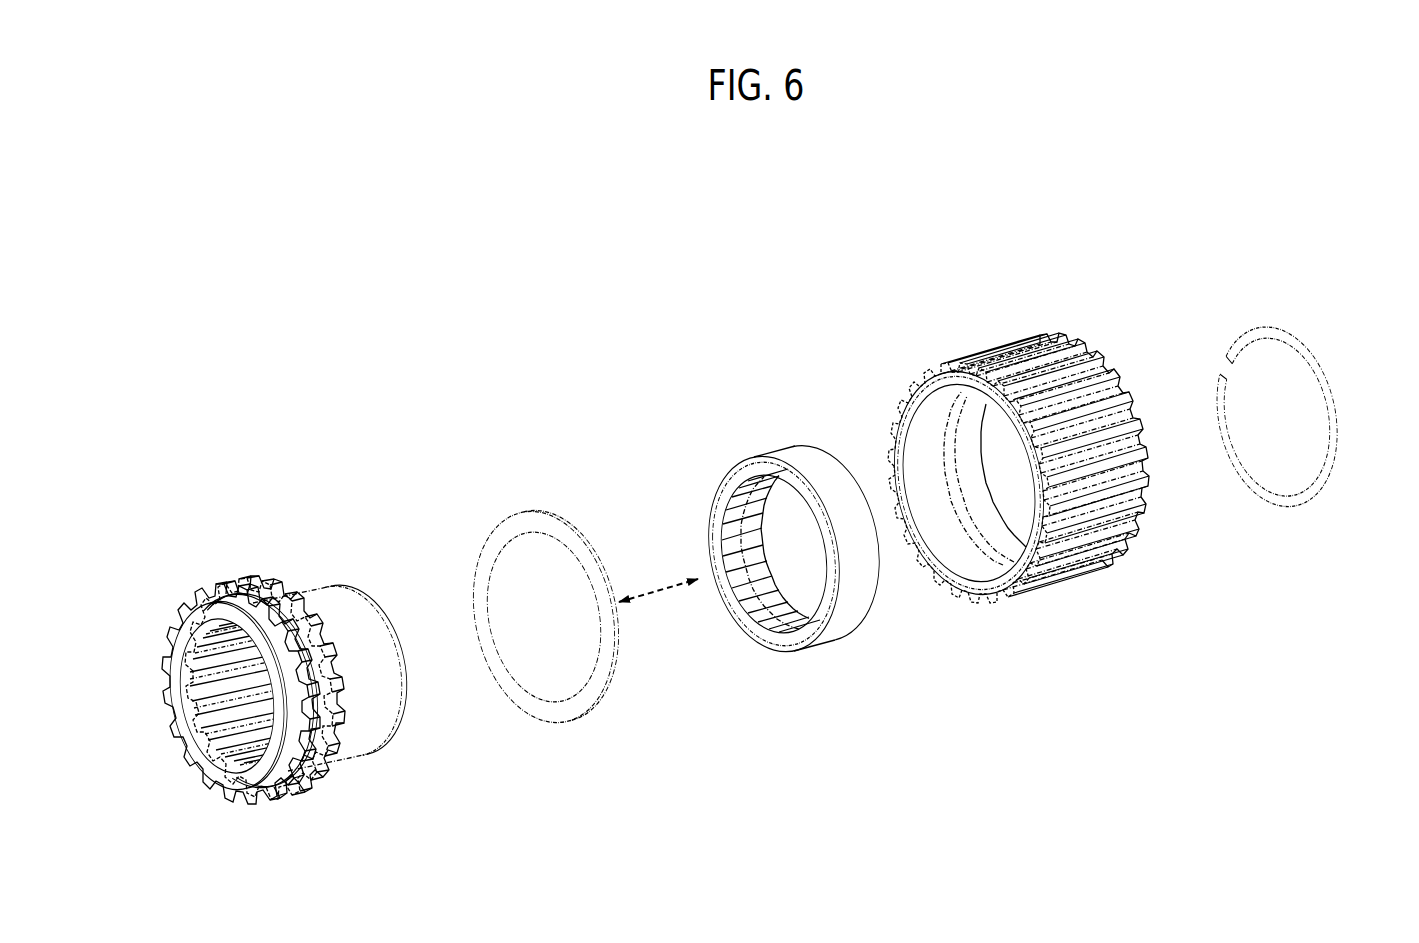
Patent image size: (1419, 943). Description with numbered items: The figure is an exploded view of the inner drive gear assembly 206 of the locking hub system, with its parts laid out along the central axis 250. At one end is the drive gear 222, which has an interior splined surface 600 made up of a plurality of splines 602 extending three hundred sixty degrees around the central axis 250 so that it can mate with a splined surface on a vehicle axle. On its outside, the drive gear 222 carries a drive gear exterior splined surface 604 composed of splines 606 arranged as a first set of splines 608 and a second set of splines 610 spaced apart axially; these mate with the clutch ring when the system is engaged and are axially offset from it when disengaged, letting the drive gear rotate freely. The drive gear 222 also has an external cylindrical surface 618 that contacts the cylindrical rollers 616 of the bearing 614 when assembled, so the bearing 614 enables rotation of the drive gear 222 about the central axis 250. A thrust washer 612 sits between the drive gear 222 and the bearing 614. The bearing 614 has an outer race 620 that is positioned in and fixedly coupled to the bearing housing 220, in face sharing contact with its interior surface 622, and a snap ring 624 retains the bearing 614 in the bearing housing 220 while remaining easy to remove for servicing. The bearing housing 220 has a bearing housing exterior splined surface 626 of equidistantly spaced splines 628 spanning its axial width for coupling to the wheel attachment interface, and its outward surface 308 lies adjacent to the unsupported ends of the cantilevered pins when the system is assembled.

The inner drive gear assembly 206 is at (1368, 213).
The drive gear 222 is at (143, 550).
The interior splined surface 600 is at (222, 712).
The splines 602 is at (192, 692).
The drive gear exterior splined surface 604 is at (190, 590).
The splines 606 is at (235, 606).
The first set of splines 608 is at (176, 613).
The second set of splines 610 is at (287, 583).
The external cylindrical surface 618 is at (361, 756).
The thrust washer 612 is at (445, 505).
The central axis 250 is at (681, 582).
The bearing 614 is at (851, 396).
The cylindrical rollers 616 is at (723, 513).
The outer race 620 is at (765, 455).
The bearing housing 220 is at (1130, 290).
The bearing housing exterior splined surface 626 is at (938, 337).
The splines 628 is at (1012, 350).
The outward surface 308 is at (957, 369).
The interior surface 622 is at (924, 443).
The snap ring 624 is at (1358, 320).